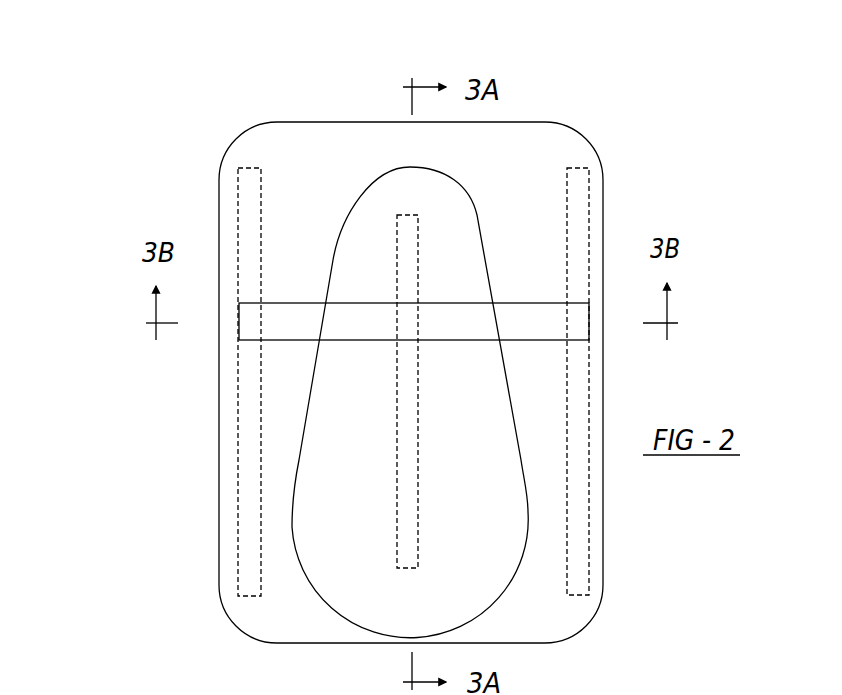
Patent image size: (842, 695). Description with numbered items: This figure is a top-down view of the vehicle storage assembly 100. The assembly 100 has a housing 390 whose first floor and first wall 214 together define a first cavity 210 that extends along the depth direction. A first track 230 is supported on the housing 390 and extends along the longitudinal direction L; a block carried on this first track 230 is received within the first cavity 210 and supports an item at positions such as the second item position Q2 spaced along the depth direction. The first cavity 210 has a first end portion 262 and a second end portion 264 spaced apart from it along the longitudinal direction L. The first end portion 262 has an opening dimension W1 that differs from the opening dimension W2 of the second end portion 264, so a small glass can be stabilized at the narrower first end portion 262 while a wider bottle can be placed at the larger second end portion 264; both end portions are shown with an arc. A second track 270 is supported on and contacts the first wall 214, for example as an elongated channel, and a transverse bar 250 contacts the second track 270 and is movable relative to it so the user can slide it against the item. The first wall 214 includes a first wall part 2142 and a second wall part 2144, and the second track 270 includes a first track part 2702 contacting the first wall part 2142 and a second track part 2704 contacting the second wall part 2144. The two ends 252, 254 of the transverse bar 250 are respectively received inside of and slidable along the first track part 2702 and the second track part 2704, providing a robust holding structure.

The vehicle storage assembly 100 is at (580, 93).
The housing 390 is at (219, 587).
The first track part 2702 is at (248, 164).
The second track part 2704 is at (583, 159).
The second track 270 is at (599, 205).
The first wall part 2142 is at (239, 441).
The second wall part 2144 is at (599, 492).
The first cavity 210 is at (372, 412).
The first end portion 262 is at (441, 164).
The second end portion 264 is at (503, 599).
The first wall 214 is at (317, 353).
The first track 230 is at (392, 463).
The transverse bar 250 is at (550, 333).
The end of transverse bar 252 is at (249, 322).
The end of transverse bar 254 is at (580, 325).
The opening dimension W1 is at (313, 195).
The opening dimension W2 is at (272, 556).
The longitudinal direction L is at (71, 259).
The second item position Q2 is at (166, 694).